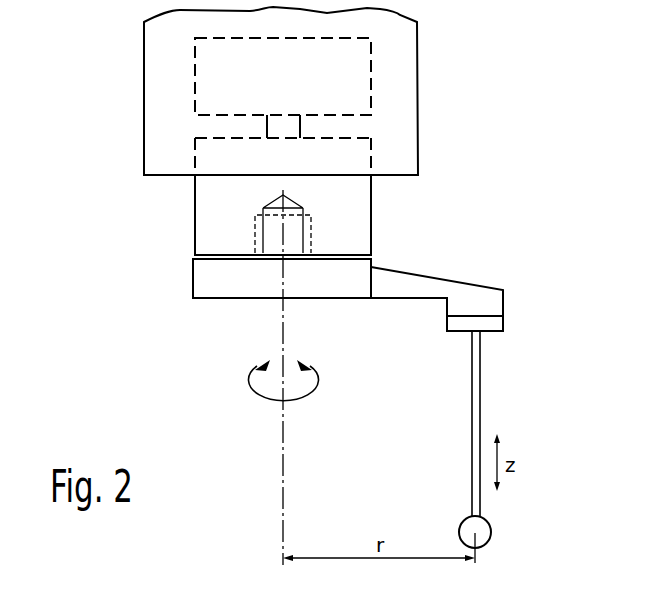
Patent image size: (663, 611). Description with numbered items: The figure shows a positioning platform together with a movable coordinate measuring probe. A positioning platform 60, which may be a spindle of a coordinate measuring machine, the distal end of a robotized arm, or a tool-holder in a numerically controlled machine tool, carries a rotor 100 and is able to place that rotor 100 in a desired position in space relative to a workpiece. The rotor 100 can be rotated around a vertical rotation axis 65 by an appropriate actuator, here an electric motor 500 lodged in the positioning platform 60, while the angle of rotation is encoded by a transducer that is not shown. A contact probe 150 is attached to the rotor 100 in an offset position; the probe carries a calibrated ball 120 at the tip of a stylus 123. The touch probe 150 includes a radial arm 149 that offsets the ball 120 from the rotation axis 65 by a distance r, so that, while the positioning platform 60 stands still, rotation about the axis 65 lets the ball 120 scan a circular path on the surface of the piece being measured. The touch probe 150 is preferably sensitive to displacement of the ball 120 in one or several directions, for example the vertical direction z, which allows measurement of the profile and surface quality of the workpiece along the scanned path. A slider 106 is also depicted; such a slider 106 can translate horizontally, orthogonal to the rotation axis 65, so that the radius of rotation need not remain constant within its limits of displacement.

The positioning platform 60 is at (160, 132).
The electric motor 500 is at (350, 83).
The rotor 100 is at (213, 225).
The slider 106 is at (312, 230).
The contact probe 150 is at (222, 279).
The radial arm 149 is at (465, 295).
The stylus 123 is at (480, 385).
The calibrated ball 120 is at (492, 528).
The rotation axis 65 is at (281, 446).